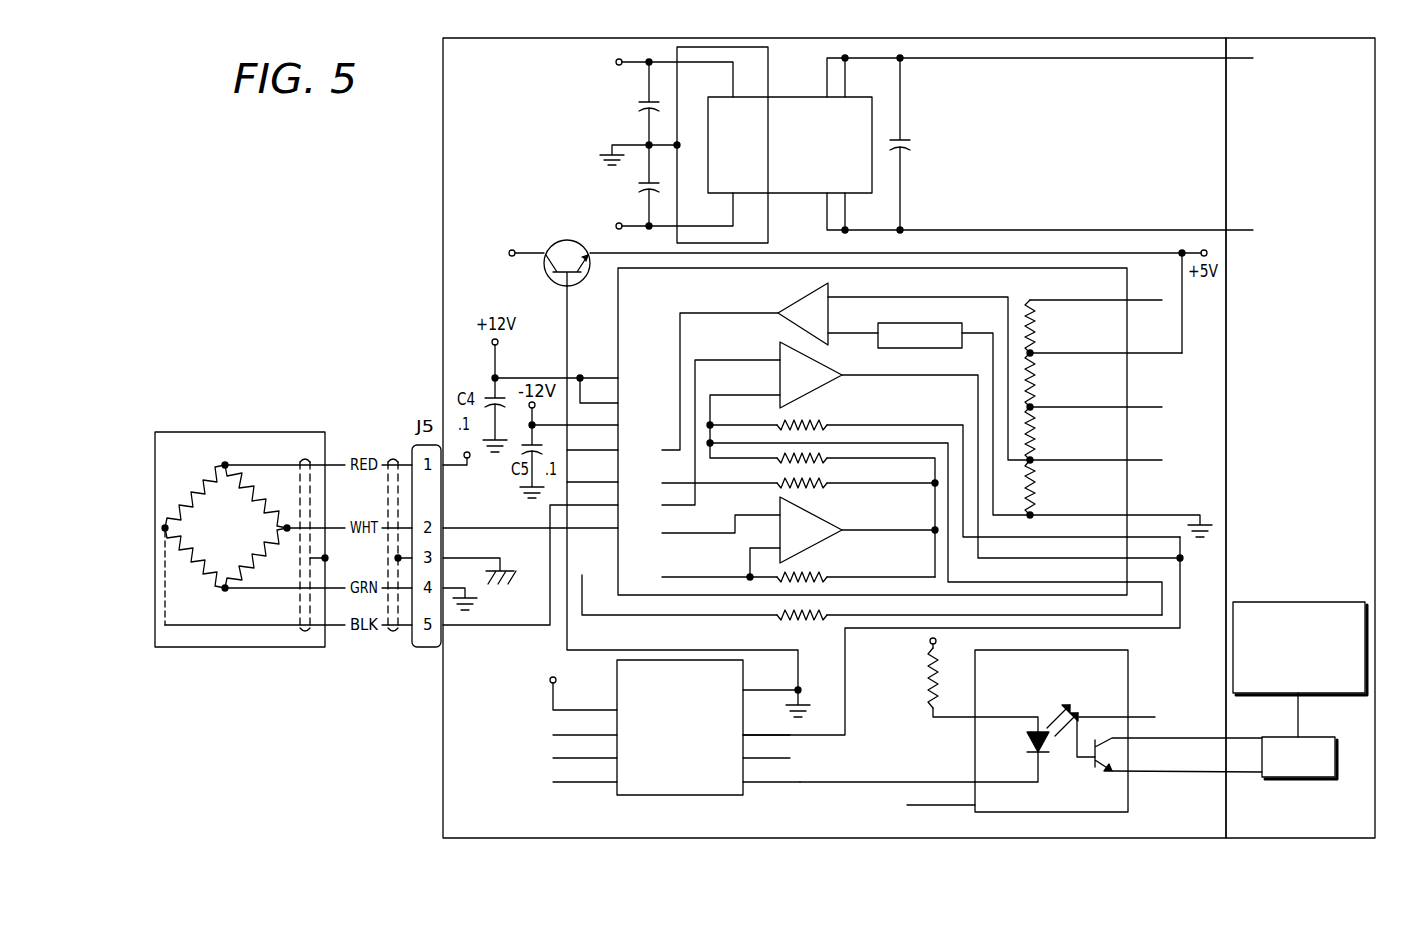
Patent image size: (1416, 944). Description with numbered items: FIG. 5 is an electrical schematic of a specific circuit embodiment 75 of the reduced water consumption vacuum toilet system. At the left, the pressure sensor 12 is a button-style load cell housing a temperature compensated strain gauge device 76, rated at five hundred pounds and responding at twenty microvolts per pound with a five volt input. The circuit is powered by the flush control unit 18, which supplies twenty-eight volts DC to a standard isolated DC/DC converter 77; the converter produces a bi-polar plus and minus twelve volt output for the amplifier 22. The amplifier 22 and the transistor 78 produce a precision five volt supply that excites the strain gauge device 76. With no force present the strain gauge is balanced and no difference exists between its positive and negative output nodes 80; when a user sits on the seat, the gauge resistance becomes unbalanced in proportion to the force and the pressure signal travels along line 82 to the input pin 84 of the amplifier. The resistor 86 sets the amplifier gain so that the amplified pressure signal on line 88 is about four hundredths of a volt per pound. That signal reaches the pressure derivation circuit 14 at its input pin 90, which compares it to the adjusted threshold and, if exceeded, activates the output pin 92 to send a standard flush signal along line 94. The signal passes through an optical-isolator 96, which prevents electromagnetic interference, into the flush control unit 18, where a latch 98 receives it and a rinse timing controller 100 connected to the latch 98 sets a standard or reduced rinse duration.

The pressure sensor 12 is at (237, 662).
The pressure derivation circuit 14 is at (668, 783).
The flush control unit 18 is at (1342, 88).
The amplifier 22 is at (1048, 277).
The specific circuit embodiment 75 is at (436, 806).
The strain gauge device 76 is at (175, 470).
The DC/DC converter 77 is at (853, 130).
The transistor 78 is at (553, 248).
The positive and negative output nodes 80 is at (163, 533).
The line 82 is at (498, 630).
The input pin 84 is at (615, 508).
The resistor 86 is at (787, 628).
The line 88 is at (1165, 630).
The input pin 90 is at (748, 737).
The output pin 92 is at (745, 783).
The line 94 is at (880, 783).
The optical-isolator 96 is at (1120, 677).
The latch 98 is at (1298, 778).
The rinse timing controller 100 is at (1297, 602).